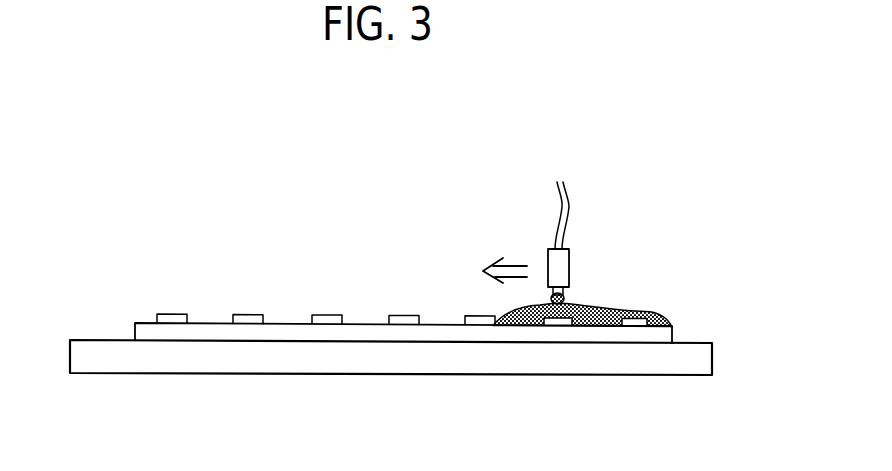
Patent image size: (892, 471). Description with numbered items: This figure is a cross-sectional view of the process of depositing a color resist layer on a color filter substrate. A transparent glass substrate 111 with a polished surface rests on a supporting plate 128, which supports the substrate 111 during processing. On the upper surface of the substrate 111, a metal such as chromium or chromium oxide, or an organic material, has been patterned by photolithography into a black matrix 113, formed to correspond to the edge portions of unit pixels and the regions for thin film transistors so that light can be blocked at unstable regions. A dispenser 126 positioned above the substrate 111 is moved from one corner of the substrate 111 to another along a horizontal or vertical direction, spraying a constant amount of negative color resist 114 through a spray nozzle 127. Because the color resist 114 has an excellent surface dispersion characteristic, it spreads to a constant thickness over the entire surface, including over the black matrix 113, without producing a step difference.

The transparent glass substrate 111 is at (219, 329).
The black matrix 113 is at (645, 310).
The color resist 114 is at (607, 310).
The dispenser 126 is at (553, 263).
The spray nozzle 127 is at (572, 300).
The supporting plate 128 is at (567, 370).